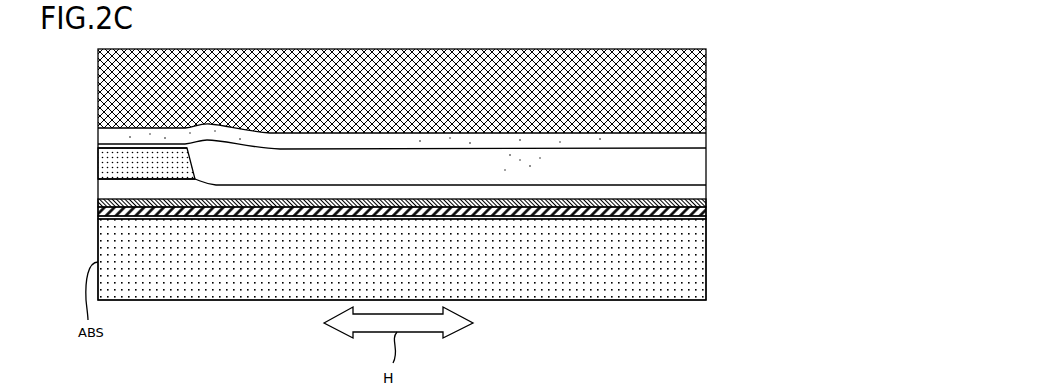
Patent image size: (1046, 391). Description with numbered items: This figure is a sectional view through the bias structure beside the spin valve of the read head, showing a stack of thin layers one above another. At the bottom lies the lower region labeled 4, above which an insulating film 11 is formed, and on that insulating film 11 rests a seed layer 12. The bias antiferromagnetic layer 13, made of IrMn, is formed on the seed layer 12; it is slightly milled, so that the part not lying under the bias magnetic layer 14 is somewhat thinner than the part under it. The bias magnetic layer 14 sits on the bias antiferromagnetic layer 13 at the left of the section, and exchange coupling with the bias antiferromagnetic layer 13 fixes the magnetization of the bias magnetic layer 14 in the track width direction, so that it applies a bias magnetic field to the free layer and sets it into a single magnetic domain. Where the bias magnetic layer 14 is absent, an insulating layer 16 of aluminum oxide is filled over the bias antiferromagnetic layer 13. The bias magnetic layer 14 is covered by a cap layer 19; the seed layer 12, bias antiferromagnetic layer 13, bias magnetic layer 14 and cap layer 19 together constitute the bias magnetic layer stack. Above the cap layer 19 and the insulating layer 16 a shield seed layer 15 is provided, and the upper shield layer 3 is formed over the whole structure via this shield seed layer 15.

The upper shield layer 3 is at (706, 107).
The shield seed layer 15 is at (706, 146).
The cap layer 19 is at (98, 144).
The bias magnetic layer 14 is at (98, 163).
The insulating layer 16 is at (706, 173).
The bias antiferromagnetic layer 13 is at (706, 192).
The seed layer 12 is at (706, 205).
The insulating film 11 is at (706, 214).
The substrate / lower shield 4 is at (706, 249).